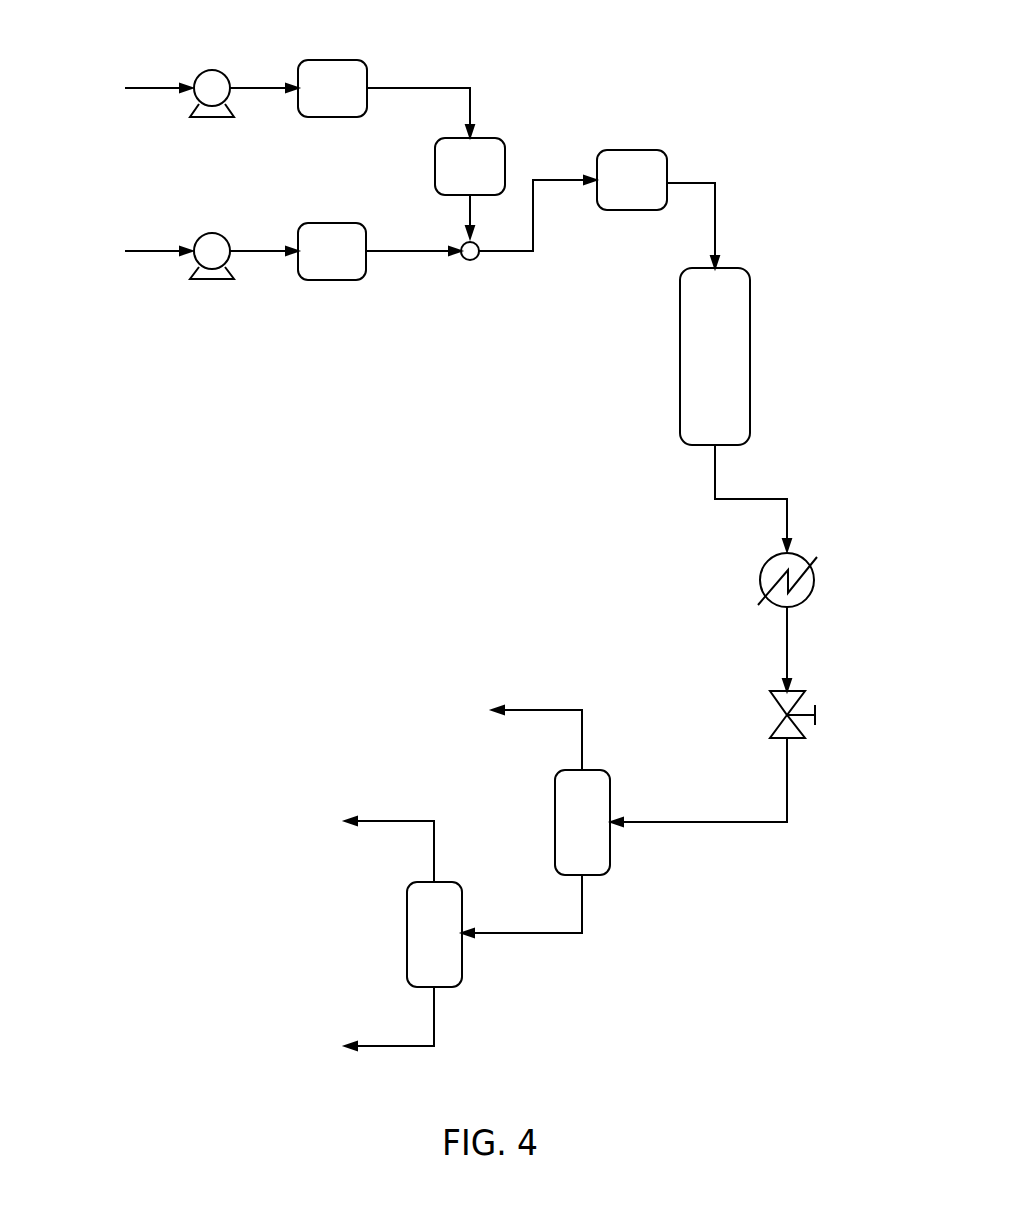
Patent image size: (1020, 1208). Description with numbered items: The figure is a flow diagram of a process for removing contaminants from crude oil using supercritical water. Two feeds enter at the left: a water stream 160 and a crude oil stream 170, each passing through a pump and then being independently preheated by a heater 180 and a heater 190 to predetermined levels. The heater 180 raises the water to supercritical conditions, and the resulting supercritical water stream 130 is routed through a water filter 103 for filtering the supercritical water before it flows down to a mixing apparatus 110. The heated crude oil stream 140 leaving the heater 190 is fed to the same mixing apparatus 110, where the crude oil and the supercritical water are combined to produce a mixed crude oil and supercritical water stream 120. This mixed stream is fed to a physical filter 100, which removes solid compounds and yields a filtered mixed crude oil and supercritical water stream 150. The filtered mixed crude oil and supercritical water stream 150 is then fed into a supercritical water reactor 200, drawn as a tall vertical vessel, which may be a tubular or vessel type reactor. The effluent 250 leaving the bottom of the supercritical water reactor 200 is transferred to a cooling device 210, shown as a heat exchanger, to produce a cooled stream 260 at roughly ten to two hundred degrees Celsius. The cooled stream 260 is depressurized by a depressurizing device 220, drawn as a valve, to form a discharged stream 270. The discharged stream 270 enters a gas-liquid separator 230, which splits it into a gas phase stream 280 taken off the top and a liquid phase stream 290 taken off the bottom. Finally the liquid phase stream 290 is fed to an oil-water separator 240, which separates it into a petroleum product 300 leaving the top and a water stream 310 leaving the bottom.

The physical filter 100 is at (633, 150).
The water filter 103 is at (497, 134).
The mixing apparatus 110 is at (472, 261).
The mixed crude oil and supercritical water stream 120 is at (533, 237).
The supercritical water stream 130 is at (432, 87).
The crude oil stream 140 is at (408, 250).
The filtered mixed crude oil and supercritical water stream 150 is at (717, 190).
The water stream 160 is at (140, 88).
The crude oil stream 170 is at (140, 250).
The heater 180 is at (320, 60).
The heater 190 is at (322, 281).
The supercritical water reactor 200 is at (680, 362).
The cooling device 210 is at (760, 580).
The depressurizing device 220 is at (779, 726).
The gas-liquid separator 230 is at (555, 795).
The oil-water separator 240 is at (407, 925).
The effluent 250 is at (773, 497).
The cooled stream 260 is at (787, 645).
The discharged stream 270 is at (753, 823).
The gas phase stream 280 is at (535, 708).
The liquid phase stream 290 is at (548, 934).
The petroleum product 300 is at (382, 820).
The water stream 310 is at (390, 1045).